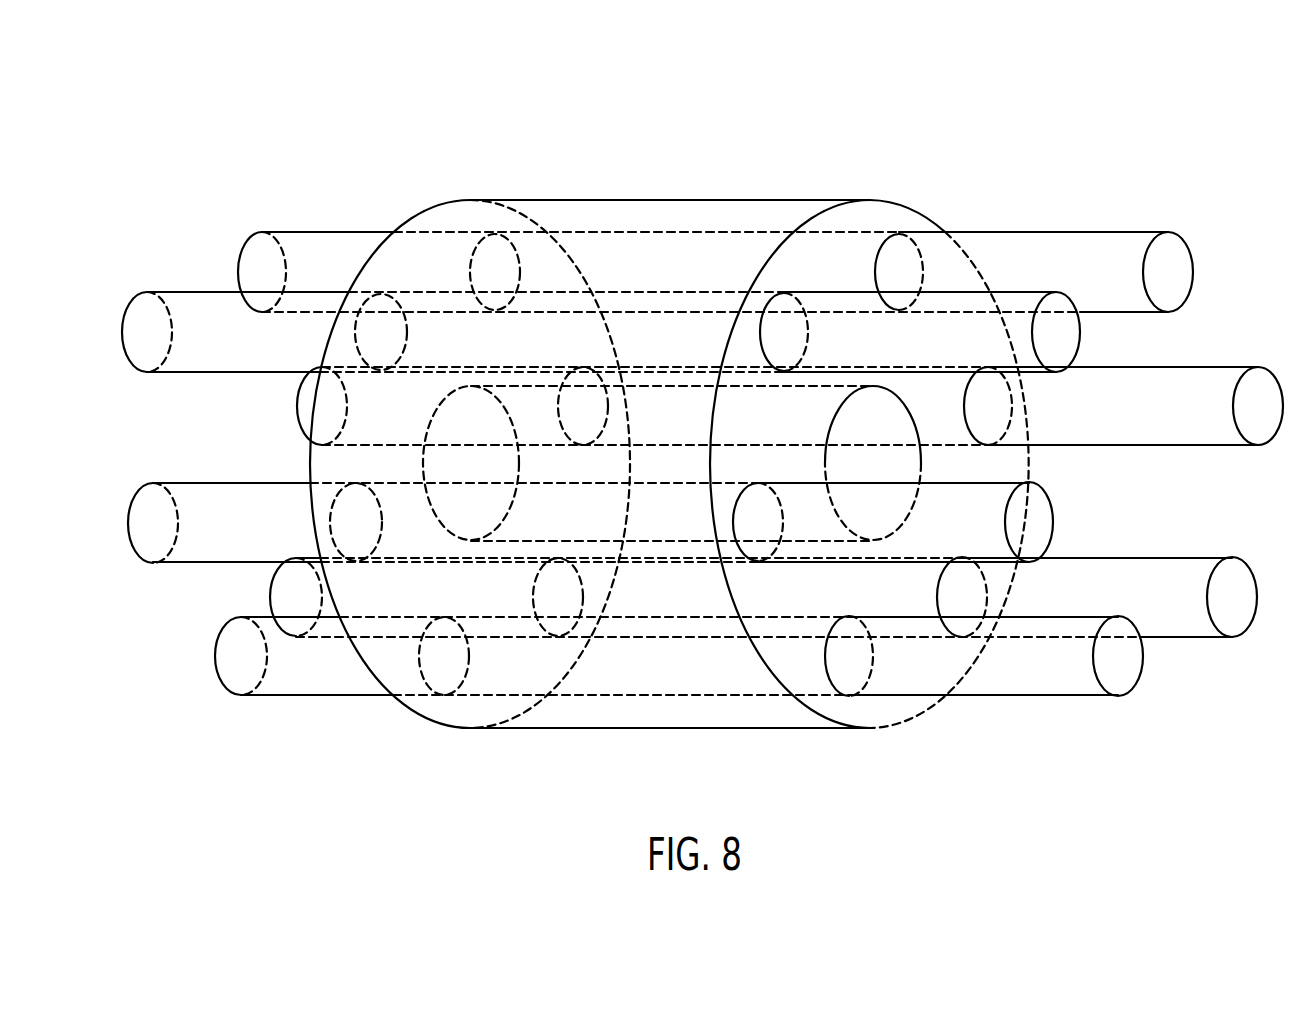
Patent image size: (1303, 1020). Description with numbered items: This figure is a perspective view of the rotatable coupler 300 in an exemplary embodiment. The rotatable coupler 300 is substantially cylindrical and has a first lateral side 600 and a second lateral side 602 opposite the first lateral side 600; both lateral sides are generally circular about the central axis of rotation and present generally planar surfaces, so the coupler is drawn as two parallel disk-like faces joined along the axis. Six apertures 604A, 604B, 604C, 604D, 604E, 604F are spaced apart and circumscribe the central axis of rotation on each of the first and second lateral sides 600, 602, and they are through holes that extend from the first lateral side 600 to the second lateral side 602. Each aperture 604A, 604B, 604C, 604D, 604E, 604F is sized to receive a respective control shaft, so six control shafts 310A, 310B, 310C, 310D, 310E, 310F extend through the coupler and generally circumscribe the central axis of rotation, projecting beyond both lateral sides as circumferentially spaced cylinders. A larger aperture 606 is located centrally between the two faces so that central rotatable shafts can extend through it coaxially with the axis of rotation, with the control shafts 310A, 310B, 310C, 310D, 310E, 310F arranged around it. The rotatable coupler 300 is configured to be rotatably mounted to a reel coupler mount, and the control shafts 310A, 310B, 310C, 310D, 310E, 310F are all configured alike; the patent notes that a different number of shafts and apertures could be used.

The rotatable coupler 300 is at (670, 123).
The first lateral side 600 is at (883, 217).
The second lateral side 602 is at (432, 222).
The central aperture 606 is at (455, 466).
The aperture 604A is at (378, 323).
The aperture 604B is at (503, 262).
The aperture 604C is at (587, 400).
The aperture 604D is at (563, 607).
The aperture 604E is at (448, 673).
The aperture 604F is at (370, 540).
The control shaft 310A is at (200, 291).
The control shaft 310B is at (290, 232).
The control shaft 310C is at (300, 413).
The control shaft 310D is at (272, 597).
The control shaft 310E is at (263, 695).
The control shaft 310F is at (188, 483).